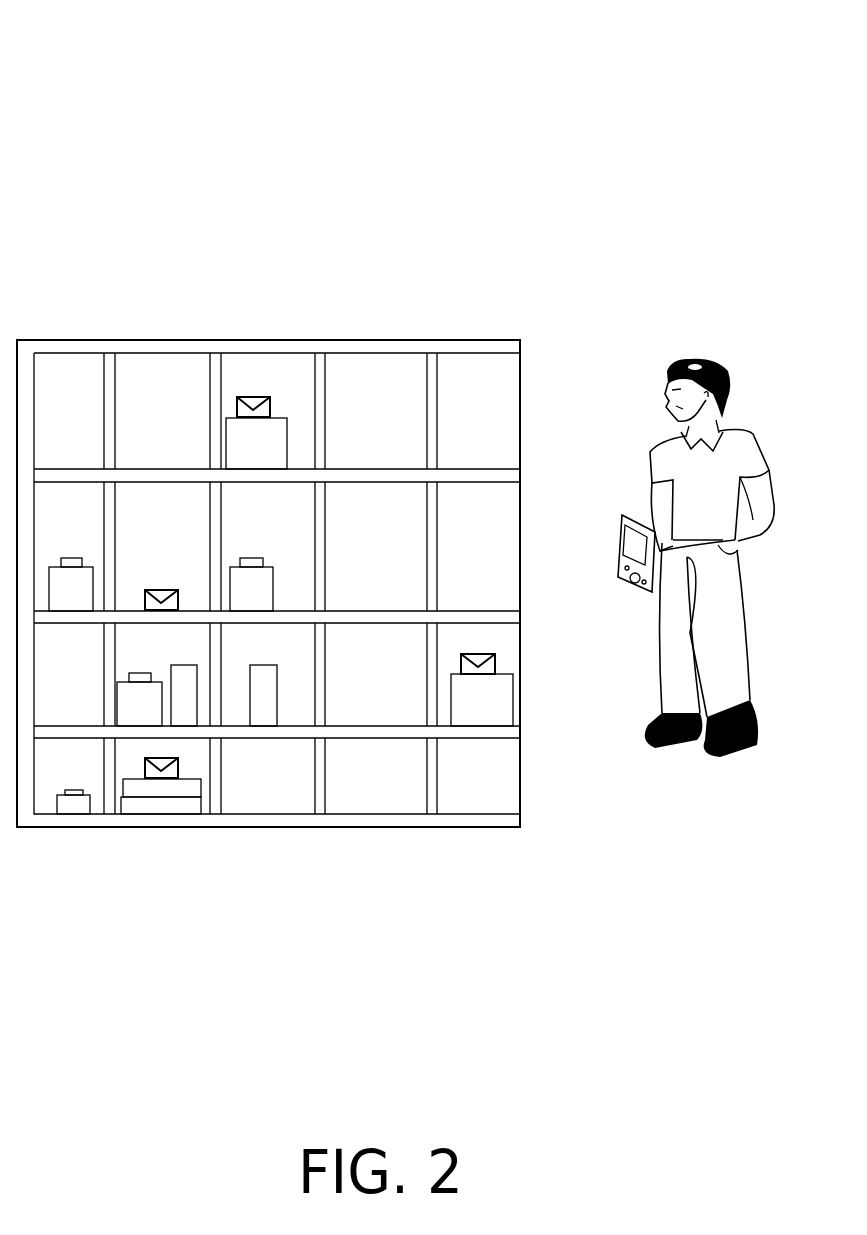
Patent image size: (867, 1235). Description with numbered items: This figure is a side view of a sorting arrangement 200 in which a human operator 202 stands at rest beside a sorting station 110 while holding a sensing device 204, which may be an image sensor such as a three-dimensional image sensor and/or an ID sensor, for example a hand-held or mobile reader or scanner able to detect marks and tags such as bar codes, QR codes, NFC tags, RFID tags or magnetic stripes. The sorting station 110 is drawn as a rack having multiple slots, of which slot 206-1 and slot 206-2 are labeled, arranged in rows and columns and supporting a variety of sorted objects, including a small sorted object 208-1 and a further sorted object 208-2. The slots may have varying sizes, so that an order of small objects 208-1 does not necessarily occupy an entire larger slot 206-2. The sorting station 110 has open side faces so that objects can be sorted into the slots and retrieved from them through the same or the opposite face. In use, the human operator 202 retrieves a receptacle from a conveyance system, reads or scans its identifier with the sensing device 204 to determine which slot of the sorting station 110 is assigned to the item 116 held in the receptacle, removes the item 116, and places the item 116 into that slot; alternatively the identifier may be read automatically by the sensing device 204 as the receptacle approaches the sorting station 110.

The environment 200 is at (110, 32).
The sorting station 110 is at (293, 340).
The slot 206-1 is at (484, 371).
The slot 206-2 is at (151, 377).
The item 116 is at (498, 674).
The sorted object 208-1 is at (57, 814).
The sorted object 208-2 is at (201, 814).
The human operator 202 is at (683, 347).
The sensing device 204 is at (621, 515).